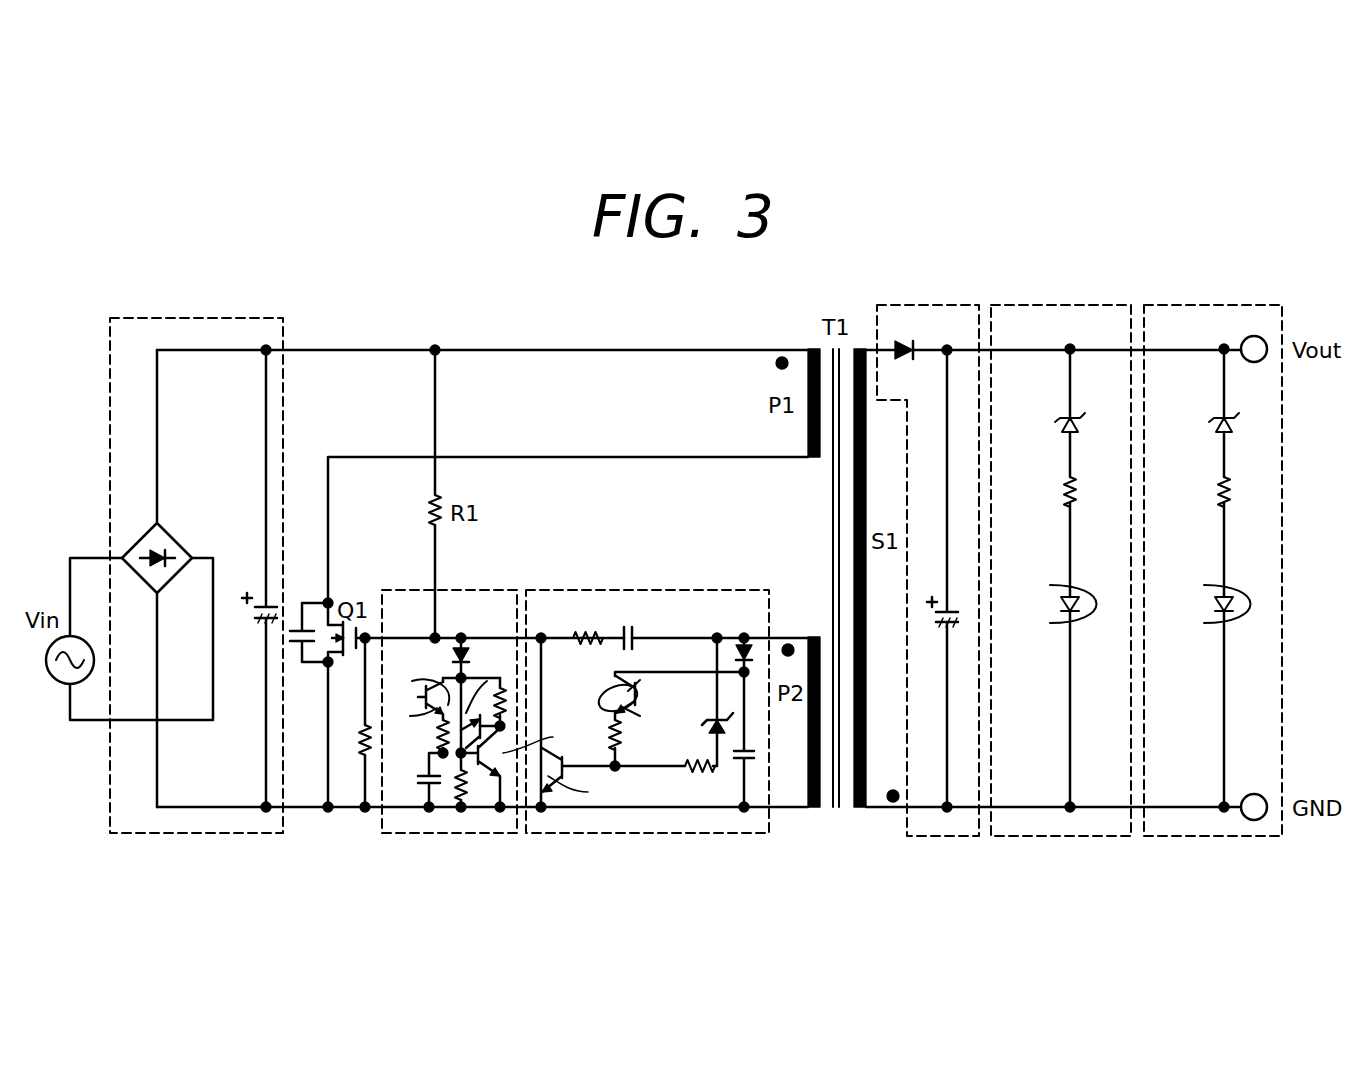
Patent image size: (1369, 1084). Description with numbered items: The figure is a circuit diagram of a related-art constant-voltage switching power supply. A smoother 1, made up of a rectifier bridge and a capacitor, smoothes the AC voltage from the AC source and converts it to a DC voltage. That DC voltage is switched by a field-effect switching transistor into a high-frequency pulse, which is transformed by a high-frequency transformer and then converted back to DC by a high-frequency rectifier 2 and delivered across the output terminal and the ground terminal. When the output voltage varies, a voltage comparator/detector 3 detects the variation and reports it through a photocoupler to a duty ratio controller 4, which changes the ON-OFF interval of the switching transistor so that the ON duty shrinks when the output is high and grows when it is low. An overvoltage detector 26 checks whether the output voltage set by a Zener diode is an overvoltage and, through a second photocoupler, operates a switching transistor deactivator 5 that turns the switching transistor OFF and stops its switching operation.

The smoother 1 is at (250, 318).
The high-frequency rectifier 2 is at (945, 305).
The voltage comparator/detector 3 is at (1094, 305).
The duty ratio controller 4 is at (740, 590).
The switching transistor deactivator 5 is at (493, 590).
The overvoltage detector 26 is at (1250, 305).